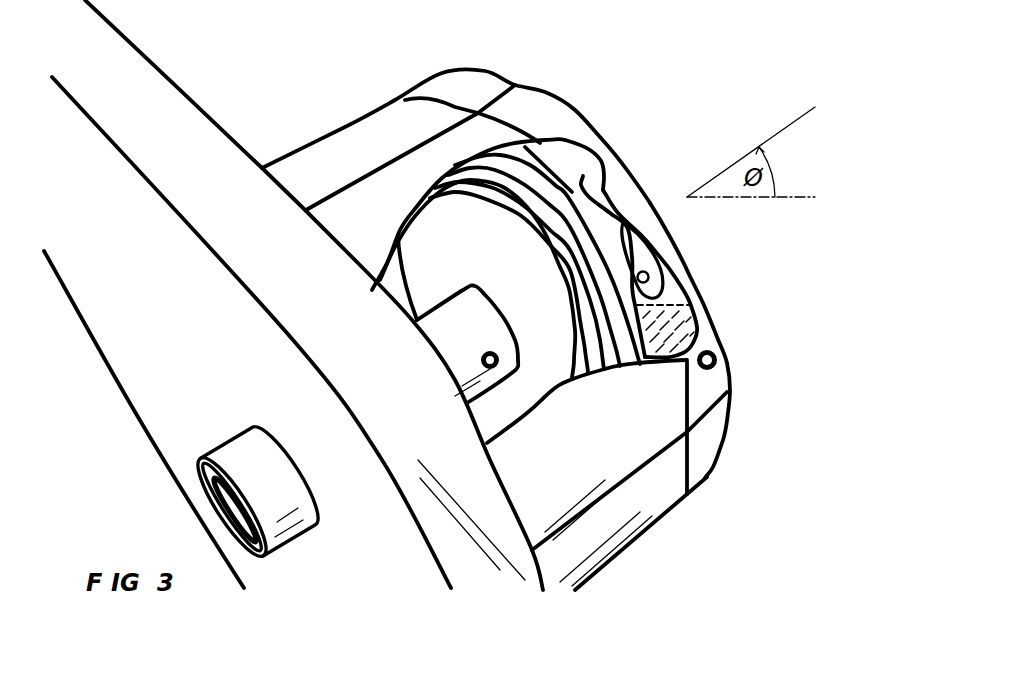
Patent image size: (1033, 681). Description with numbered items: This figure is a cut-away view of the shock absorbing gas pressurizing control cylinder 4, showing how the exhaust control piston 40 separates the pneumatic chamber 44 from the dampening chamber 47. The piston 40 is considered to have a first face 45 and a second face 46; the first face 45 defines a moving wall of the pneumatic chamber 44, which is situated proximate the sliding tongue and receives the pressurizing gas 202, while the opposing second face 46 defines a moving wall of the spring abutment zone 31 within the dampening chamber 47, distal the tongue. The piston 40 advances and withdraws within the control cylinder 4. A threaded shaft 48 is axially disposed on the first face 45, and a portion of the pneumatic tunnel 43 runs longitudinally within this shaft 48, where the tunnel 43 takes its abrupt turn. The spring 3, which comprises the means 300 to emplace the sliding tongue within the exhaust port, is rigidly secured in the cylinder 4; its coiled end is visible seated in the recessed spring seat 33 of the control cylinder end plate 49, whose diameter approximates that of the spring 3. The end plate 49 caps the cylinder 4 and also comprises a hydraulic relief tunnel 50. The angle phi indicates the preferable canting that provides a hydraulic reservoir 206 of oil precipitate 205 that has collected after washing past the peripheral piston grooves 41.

The spring 3 is at (672, 255).
The shock absorbing gas pressurizing control cylinder 4 is at (582, 380).
The spring abutment zone 31 is at (602, 158).
The recessed spring seat 33 is at (643, 222).
The exhaust control piston 40 is at (722, 373).
The peripheral piston grooves 41 is at (683, 363).
The pneumatic tunnel 43 is at (620, 380).
The pneumatic chamber 44 is at (655, 365).
The first face 45 is at (680, 445).
The second face 46 is at (566, 190).
The dampening chamber 47 is at (548, 157).
The threaded shaft 48 is at (257, 445).
The control cylinder end plate 49 is at (721, 366).
The hydraulic relief tunnel 50 is at (715, 357).
The pressurizing gas 202 is at (690, 440).
The oil precipitate 205 is at (660, 340).
The hydraulic reservoir 206 is at (655, 315).
The means to emplace the sliding tongue 300 is at (665, 275).